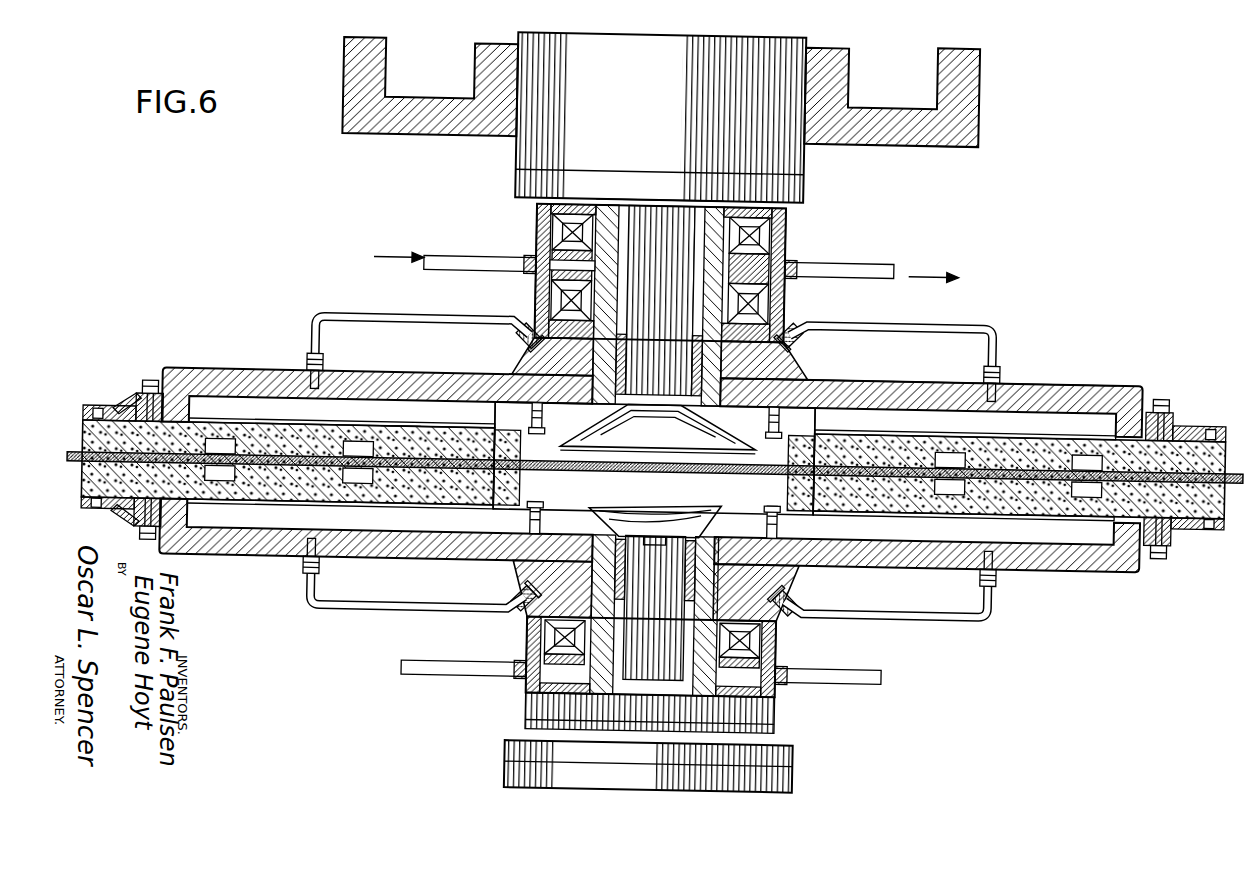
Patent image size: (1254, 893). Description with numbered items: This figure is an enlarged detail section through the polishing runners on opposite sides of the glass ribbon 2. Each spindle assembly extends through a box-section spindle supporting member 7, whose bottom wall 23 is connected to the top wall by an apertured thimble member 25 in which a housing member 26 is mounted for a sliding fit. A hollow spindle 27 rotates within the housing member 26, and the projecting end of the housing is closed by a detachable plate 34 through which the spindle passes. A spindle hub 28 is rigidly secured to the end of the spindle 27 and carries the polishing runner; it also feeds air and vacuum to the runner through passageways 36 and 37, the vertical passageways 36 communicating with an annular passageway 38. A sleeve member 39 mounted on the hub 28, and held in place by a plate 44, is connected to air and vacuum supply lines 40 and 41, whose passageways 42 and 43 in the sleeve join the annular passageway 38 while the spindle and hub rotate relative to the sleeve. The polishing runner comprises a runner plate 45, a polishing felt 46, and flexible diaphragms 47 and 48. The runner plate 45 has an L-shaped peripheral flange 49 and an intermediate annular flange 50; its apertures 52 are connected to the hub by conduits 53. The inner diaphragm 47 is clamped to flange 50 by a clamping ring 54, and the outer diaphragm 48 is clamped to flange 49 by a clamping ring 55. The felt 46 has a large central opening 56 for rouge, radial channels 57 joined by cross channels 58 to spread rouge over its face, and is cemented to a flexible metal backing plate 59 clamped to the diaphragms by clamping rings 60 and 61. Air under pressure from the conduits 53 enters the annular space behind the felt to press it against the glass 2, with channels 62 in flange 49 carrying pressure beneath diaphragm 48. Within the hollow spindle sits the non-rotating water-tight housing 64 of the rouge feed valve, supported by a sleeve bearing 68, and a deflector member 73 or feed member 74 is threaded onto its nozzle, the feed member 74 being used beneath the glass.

The glass ribbon 2 is at (80, 461).
The spindle supporting member 7 is at (973, 92).
The bottom wall 23 is at (969, 139).
The thimble member 25 is at (828, 72).
The housing member 26 is at (567, 50).
The hollow spindle 27 is at (607, 196).
The spindle hub 28 is at (788, 357).
The detachable plate 34 is at (795, 182).
The vertical passageways 36 is at (730, 302).
The passageways 37 is at (526, 345).
The annular passageway 38 is at (736, 268).
The sleeve member 39 is at (532, 234).
The air supply line 40 is at (421, 266).
The vacuum supply line 41 is at (891, 257).
The passageway 42 is at (551, 272).
The passageway 43 is at (780, 223).
The plate 44 is at (535, 212).
The runner plate 45 is at (228, 376).
The polishing felt 46 is at (247, 448).
The inner flexible diaphragm 47 is at (519, 421).
The outer flexible diaphragm 48 is at (124, 415).
The L-shaped peripheral flange 49 is at (208, 376).
The intermediate annular flange 50 is at (818, 380).
The apertures 52 is at (321, 383).
The conduits 53 is at (352, 321).
The clamping ring 54 is at (539, 432).
The clamping ring 55 is at (140, 400).
The central opening 56 is at (451, 434).
The channels 57 is at (397, 450).
The cross channels 58 is at (351, 451).
The flexible metal backing plate 59 is at (271, 405).
The clamping ring 60 is at (476, 416).
The clamping ring 61 is at (104, 415).
The channels 62 is at (196, 427).
The water-tight housing 64 is at (638, 318).
The sleeve bearing 68 is at (711, 361).
The deflector member 73 is at (640, 429).
The feed member 74 is at (650, 517).